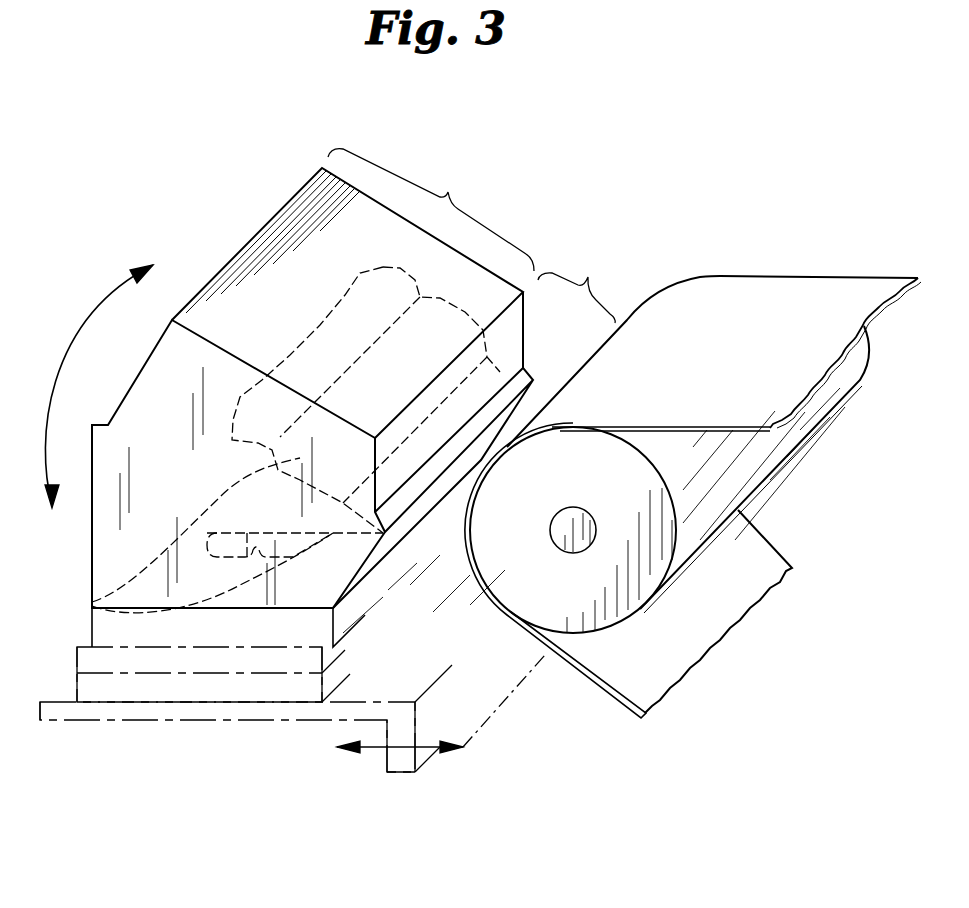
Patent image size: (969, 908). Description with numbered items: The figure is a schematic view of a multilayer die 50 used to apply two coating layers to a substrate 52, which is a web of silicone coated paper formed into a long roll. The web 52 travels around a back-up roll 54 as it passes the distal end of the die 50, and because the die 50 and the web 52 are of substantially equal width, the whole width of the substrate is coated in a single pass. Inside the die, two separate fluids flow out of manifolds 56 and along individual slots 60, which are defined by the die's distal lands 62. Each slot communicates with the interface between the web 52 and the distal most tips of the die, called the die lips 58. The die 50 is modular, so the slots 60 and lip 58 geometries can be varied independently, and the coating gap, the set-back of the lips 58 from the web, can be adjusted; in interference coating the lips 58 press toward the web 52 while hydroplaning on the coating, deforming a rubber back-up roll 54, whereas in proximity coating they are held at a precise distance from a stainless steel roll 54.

The multilayer die 50 is at (602, 181).
The substrate 52 is at (773, 277).
The back-up roll 54 is at (600, 633).
The manifolds 56 is at (92, 601).
The die lips 58 is at (410, 510).
The slots 60 is at (431, 210).
The distal lands 62 is at (576, 286).